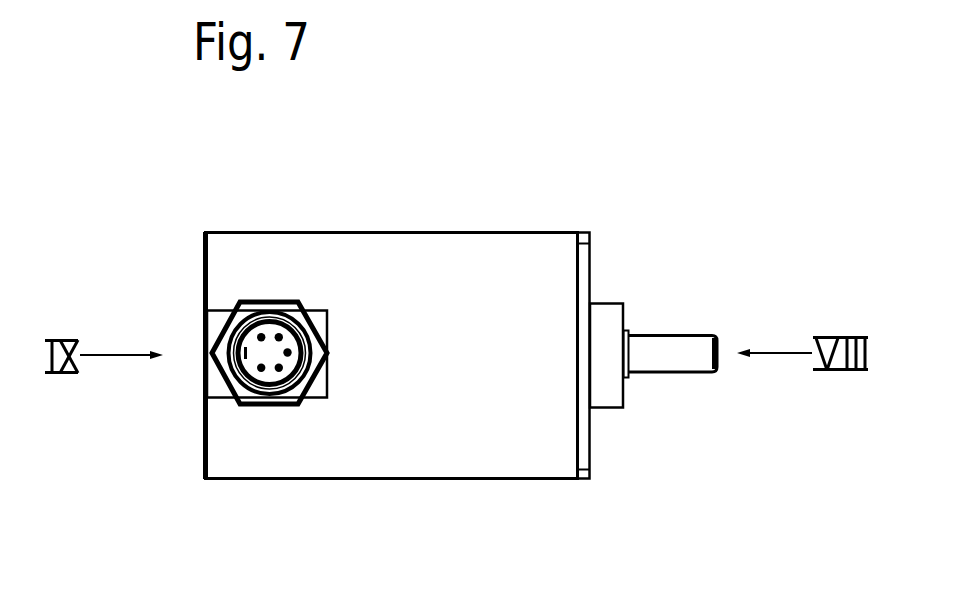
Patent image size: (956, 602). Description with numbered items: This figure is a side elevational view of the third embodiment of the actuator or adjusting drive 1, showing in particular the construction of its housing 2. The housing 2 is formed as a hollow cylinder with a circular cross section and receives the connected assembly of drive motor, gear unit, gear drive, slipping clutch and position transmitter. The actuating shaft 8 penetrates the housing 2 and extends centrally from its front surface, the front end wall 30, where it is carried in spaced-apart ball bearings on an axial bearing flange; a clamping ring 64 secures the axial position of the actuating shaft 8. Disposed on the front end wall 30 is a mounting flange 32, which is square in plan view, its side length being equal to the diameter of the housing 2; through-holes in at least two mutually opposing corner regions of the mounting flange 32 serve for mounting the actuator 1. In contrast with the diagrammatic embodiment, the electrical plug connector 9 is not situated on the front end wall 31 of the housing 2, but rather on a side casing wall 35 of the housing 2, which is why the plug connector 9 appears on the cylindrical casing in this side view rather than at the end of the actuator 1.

The actuator or adjusting drive 1 is at (366, 214).
The housing 2 is at (465, 202).
The actuating shaft 8 is at (673, 348).
The electrical plug connector 9 is at (239, 305).
The front end wall 30 is at (619, 266).
The front end wall 31 is at (202, 420).
The mounting flange 32 is at (587, 262).
The side casing wall 35 is at (260, 430).
The clamping ring 64 is at (627, 332).